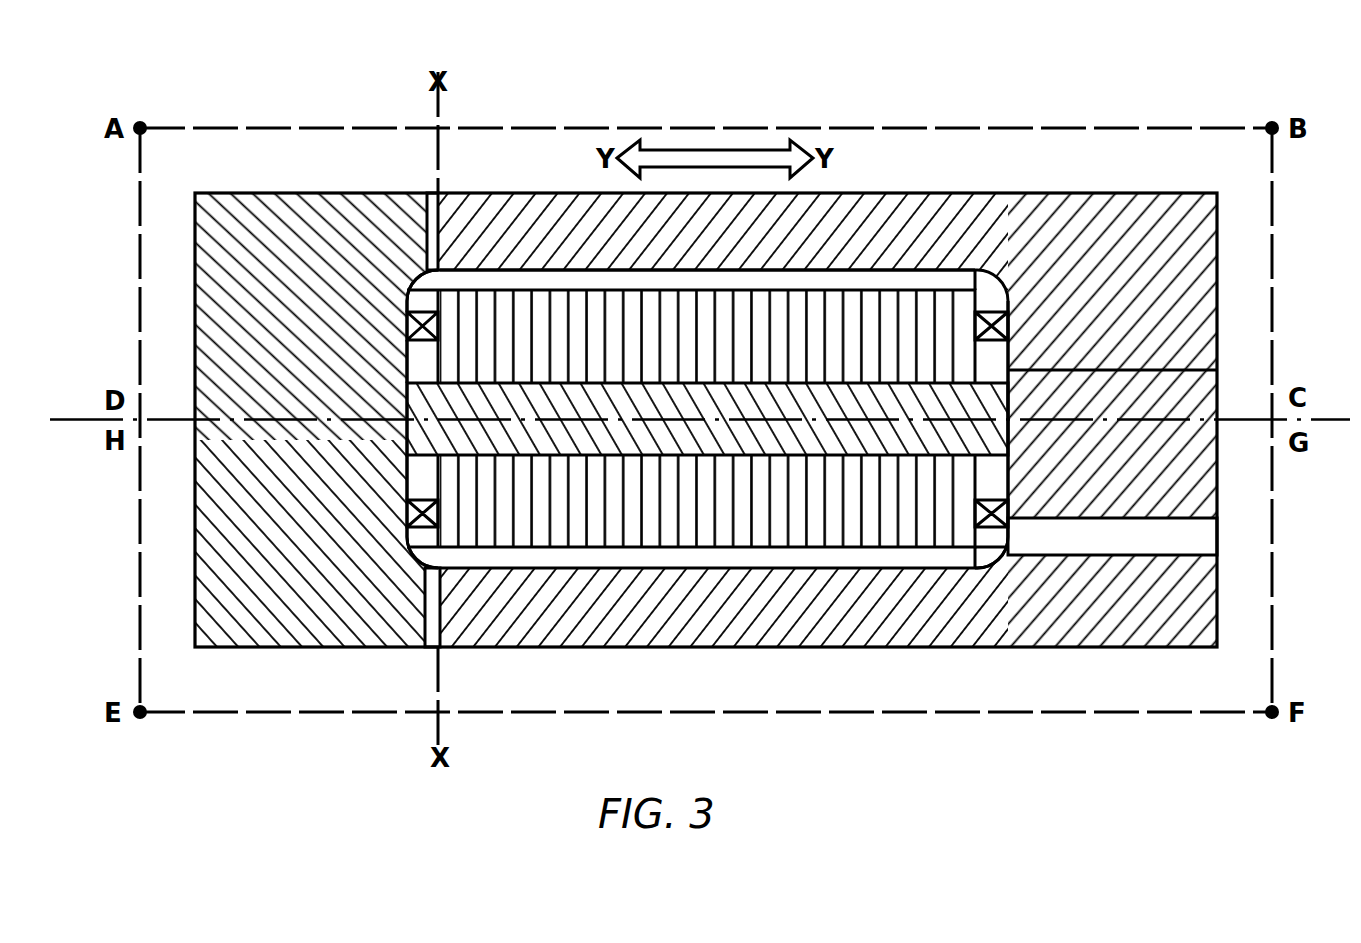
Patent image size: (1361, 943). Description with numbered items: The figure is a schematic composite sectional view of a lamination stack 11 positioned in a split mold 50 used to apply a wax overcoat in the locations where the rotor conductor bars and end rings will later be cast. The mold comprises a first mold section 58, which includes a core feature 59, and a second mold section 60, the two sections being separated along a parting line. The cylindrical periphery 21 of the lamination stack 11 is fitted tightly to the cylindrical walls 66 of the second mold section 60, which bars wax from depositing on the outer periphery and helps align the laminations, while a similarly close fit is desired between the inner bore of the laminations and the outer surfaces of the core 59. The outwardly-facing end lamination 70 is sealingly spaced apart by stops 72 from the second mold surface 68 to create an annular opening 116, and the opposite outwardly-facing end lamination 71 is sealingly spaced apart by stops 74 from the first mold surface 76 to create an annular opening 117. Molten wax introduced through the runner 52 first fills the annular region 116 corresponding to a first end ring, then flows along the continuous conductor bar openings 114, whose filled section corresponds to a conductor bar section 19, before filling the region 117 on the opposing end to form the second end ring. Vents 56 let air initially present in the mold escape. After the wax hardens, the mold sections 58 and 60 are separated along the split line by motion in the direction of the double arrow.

The lamination stack 11 is at (918, 260).
The conductor bar section 19 is at (556, 282).
The cylindrical periphery 21 is at (512, 281).
The split mold 50 is at (1052, 182).
The runner 52 is at (1173, 537).
The vents 56 is at (433, 205).
The first mold section 58 is at (218, 537).
The core feature 59 is at (683, 425).
The second mold section 60 is at (1150, 215).
The cylindrical walls 66 is at (858, 268).
The second mold surface 68 is at (1010, 370).
The outwardly-facing end lamination 70 is at (1010, 303).
The outwardly-facing end lamination 71 is at (436, 273).
The stops 72 is at (1010, 325).
The stops 74 is at (420, 326).
The first mold surface 76 is at (407, 290).
The conductor bar openings 114 is at (777, 558).
The annular opening 116 is at (983, 540).
The annular opening 117 is at (405, 540).